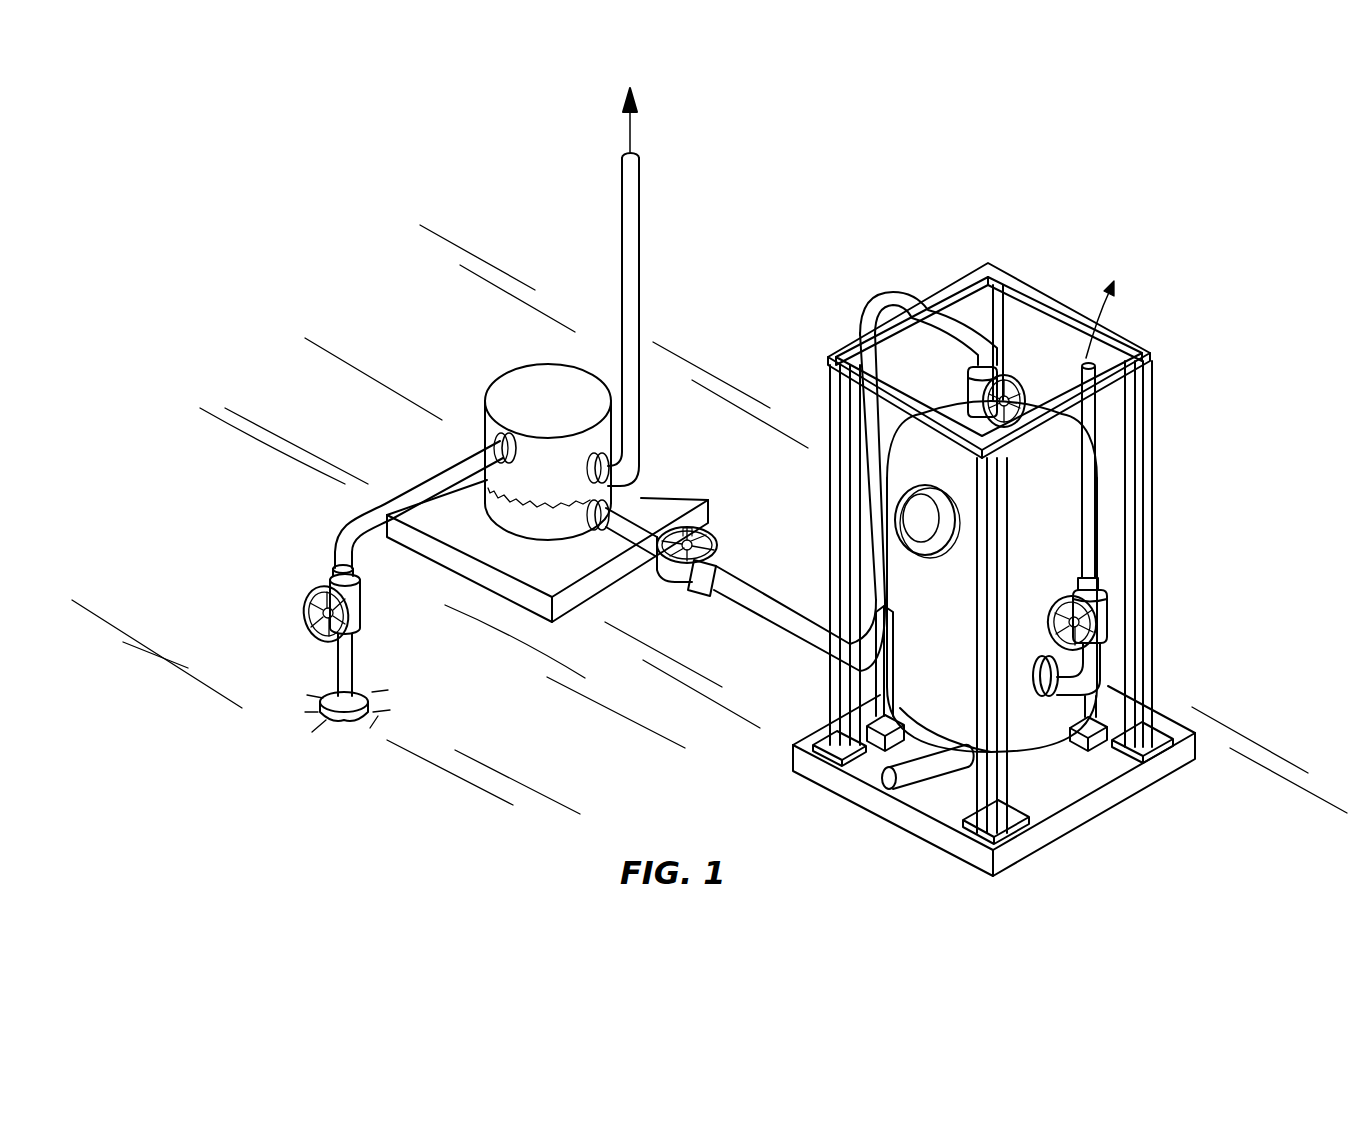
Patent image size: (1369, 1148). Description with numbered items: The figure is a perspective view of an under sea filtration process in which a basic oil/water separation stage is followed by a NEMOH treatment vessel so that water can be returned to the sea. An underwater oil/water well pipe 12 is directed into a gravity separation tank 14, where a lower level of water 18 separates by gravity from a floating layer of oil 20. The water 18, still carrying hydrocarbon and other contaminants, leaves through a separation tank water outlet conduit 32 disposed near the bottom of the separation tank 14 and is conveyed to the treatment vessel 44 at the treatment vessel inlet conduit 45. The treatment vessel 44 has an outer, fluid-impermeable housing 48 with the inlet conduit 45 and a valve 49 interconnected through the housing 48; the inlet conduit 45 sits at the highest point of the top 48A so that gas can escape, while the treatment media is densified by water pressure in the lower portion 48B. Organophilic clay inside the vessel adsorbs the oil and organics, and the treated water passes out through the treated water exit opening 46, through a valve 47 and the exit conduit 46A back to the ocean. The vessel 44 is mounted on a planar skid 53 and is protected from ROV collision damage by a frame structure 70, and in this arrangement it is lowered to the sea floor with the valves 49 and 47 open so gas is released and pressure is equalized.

The underwater oil/water well pipe 12 is at (337, 666).
The gravity separation tank 14 is at (514, 374).
The water 18 is at (561, 537).
The floating layer of oil 20 is at (561, 490).
The separation tank water outlet conduit 32 is at (757, 603).
The treatment vessel 44 is at (1058, 518).
The treatment vessel inlet conduit 45 is at (965, 386).
The treated water exit opening 46 is at (1077, 699).
The exit conduit 46A is at (1090, 475).
The valve 47 is at (1103, 617).
The housing 48 is at (1048, 571).
The top 48A is at (1057, 440).
The lower portion 48B is at (1040, 730).
The valve 49 is at (1031, 380).
The planar skid 53 is at (1030, 852).
The frame structure 70 is at (1037, 294).